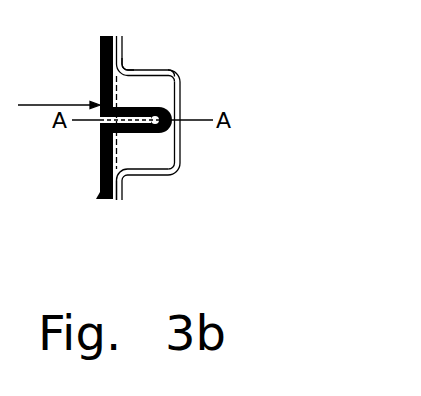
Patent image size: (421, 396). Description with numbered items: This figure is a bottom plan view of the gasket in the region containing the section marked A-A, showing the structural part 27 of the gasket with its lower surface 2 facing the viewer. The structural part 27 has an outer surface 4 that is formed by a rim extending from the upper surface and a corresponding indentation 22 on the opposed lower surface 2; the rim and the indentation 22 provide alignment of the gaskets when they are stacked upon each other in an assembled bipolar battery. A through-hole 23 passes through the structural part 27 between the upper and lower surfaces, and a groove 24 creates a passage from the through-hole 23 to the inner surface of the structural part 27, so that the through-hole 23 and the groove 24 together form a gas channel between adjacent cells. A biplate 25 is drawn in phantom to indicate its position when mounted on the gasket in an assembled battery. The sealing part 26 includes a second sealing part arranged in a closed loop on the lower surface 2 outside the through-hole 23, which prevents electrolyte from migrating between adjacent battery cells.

The lower surface 2 is at (171, 78).
The outer surface 4 is at (190, 138).
The indentation 22 is at (193, 160).
The through-hole 23 is at (168, 118).
The groove 24 is at (100, 126).
The biplate 25 is at (128, 77).
The sealing part 26 is at (98, 90).
The structural part 27 is at (143, 160).